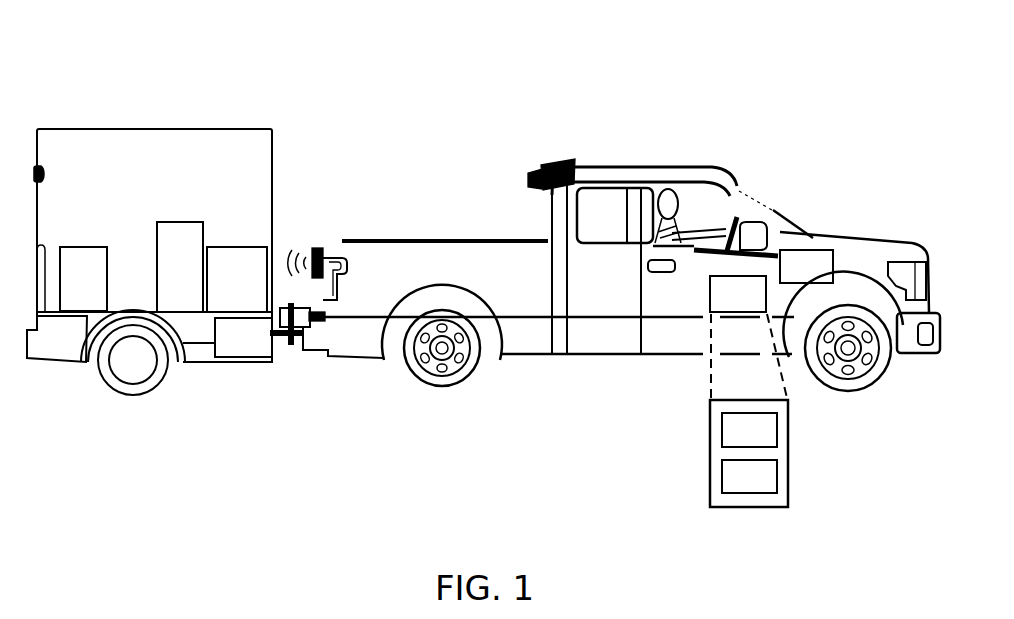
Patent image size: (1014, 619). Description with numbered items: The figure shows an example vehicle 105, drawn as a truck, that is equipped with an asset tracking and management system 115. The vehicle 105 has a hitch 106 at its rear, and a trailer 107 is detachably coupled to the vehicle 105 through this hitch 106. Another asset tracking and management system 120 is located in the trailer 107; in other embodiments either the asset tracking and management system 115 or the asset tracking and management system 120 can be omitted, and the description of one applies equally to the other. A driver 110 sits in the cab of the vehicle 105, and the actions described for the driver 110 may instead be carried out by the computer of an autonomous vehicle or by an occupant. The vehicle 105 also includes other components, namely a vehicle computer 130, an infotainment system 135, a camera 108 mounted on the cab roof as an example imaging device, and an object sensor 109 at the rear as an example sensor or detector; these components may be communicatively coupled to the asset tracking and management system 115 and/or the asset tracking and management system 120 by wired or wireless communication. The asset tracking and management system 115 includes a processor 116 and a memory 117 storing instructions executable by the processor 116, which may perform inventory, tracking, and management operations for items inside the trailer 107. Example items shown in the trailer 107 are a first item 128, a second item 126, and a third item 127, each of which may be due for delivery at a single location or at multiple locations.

The vehicle 105 is at (721, 126).
The hitch 106 is at (295, 353).
The trailer 107 is at (263, 108).
The camera 108 is at (578, 163).
The object sensor 109 is at (325, 242).
The driver 110 is at (690, 215).
The asset tracking and management system 115 is at (726, 303).
The processor 116 is at (736, 440).
The memory 117 is at (736, 487).
The asset tracking and management system 120 is at (230, 347).
The second item 126 is at (167, 289).
The third item 127 is at (225, 285).
The first item 128 is at (70, 289).
The vehicle computer 130 is at (794, 276).
The infotainment system 135 is at (748, 214).